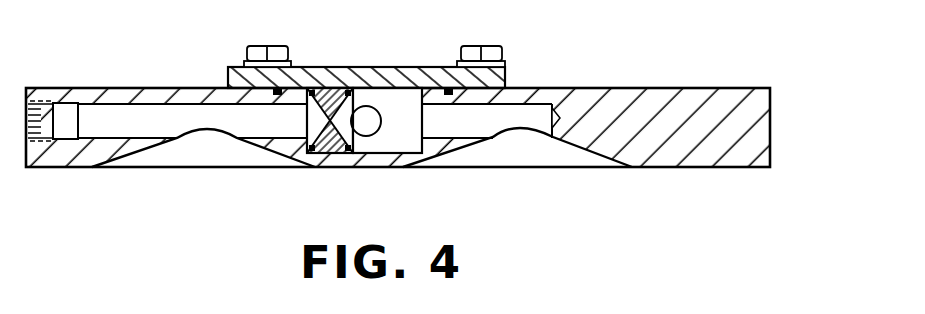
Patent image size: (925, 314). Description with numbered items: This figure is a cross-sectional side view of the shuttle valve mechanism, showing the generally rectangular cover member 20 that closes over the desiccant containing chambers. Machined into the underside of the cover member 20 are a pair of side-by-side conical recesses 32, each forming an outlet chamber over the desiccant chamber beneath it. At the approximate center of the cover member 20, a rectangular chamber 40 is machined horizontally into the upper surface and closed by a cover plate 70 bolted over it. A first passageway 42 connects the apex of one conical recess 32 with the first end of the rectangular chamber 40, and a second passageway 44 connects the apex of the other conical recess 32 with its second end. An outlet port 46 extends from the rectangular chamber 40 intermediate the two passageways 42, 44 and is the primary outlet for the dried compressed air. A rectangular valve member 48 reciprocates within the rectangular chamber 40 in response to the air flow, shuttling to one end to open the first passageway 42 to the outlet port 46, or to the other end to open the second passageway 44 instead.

The cover member 20 is at (117, 93).
The first passageway 42 is at (180, 115).
The second passageway 44 is at (520, 112).
The conical recesses 32 is at (210, 145).
The rectangular valve member 48 is at (330, 97).
The outlet port 46 is at (372, 113).
The rectangular chamber 40 is at (407, 104).
The cover plate 70 is at (490, 80).